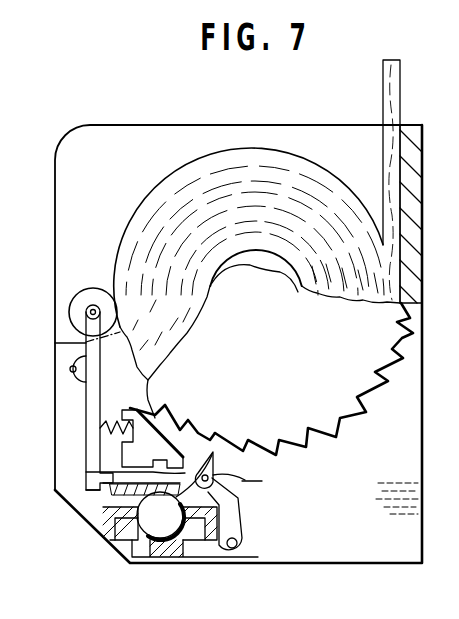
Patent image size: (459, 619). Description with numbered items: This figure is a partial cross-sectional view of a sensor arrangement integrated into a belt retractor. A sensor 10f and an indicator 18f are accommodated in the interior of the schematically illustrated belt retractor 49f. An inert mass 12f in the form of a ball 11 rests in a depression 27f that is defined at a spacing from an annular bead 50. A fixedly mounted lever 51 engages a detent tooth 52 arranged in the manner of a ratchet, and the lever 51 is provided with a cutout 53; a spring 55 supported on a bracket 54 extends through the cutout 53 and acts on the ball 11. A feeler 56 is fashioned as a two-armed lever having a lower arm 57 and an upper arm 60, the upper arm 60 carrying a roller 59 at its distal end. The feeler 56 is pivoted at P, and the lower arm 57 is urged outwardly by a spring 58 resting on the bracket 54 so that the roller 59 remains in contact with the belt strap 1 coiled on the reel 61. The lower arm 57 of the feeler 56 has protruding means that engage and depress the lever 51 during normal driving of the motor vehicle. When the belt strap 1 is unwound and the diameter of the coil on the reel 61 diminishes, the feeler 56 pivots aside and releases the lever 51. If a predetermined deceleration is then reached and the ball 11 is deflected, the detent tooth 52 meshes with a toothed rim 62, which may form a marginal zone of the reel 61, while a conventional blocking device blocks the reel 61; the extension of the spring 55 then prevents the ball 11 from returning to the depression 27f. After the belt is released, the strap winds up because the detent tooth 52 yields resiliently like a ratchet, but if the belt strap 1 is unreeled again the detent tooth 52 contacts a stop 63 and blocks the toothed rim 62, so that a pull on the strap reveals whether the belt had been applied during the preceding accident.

The belt strap 1 is at (400, 98).
The sensor 10f is at (92, 508).
The ball 11 is at (188, 548).
The inert mass 12f is at (162, 548).
The indicator 18f is at (262, 481).
The depression 27f is at (140, 545).
The belt retractor 49f is at (408, 451).
The annular bead 50 is at (110, 540).
The lever 51 is at (238, 520).
The detent tooth 52 is at (222, 470).
The cutout 53 is at (210, 450).
The bracket 54 is at (150, 432).
The spring 55 is at (86, 472).
The feeler 56 is at (80, 434).
The lower arm 57 is at (88, 493).
The spring 58 is at (103, 428).
The roller 59 is at (91, 289).
The upper arm 60 is at (86, 310).
The reel 61 is at (332, 400).
The toothed rim 62 is at (380, 390).
The stop 63 is at (222, 484).
The pivot P is at (68, 369).